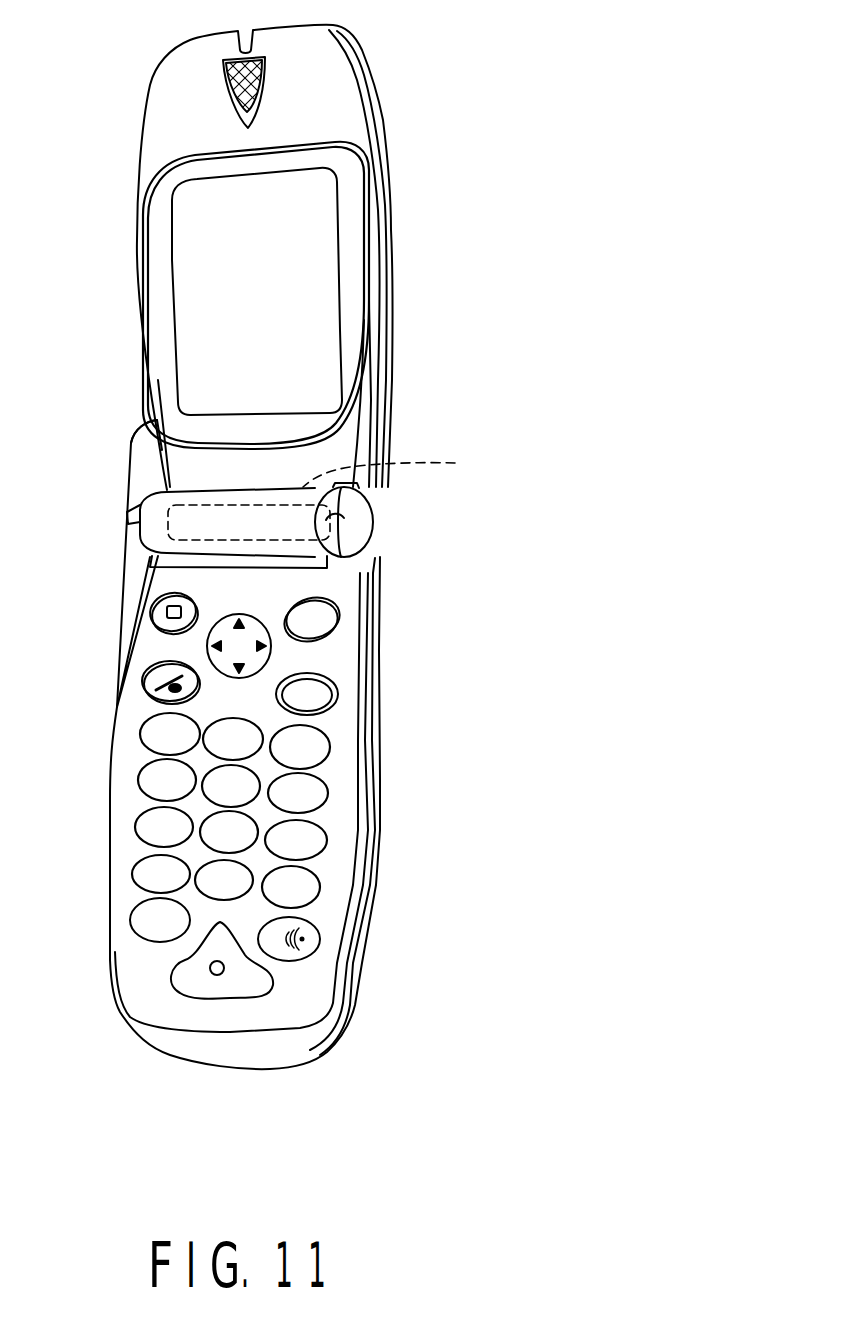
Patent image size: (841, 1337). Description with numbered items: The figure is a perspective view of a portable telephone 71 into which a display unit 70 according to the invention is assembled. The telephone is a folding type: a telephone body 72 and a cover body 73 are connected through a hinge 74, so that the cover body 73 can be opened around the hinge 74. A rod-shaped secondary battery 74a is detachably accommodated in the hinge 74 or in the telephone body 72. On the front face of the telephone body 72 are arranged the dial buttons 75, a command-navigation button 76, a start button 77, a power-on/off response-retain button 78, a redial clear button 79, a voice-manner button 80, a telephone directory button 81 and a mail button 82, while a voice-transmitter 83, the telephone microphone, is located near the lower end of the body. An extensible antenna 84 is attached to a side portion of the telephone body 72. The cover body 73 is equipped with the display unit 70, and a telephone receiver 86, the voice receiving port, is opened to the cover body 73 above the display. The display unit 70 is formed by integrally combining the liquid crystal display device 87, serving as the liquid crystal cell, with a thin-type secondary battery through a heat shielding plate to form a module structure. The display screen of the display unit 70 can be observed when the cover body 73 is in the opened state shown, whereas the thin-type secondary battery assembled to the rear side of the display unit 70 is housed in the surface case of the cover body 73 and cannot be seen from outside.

The display unit 70 is at (337, 225).
The portable telephone 71 is at (393, 343).
The telephone body 72 is at (370, 737).
The cover body 73 is at (388, 362).
The hinge 74 is at (327, 515).
The rod-shaped secondary battery 74a is at (411, 469).
The dial buttons 75 is at (133, 868).
The command-navigation button 76 is at (207, 653).
The start button 77 is at (150, 680).
The power-on/off response-retain button 78 is at (338, 690).
The redial clear button 79 is at (340, 613).
The voice-manner button 80 is at (303, 950).
The telephone directory button 81 is at (153, 600).
The mail button 82 is at (140, 917).
The voice-transmitter 83 is at (213, 968).
The extensible antenna 84 is at (142, 457).
The telephone receiver 86 is at (243, 33).
The liquid crystal display device 87 is at (200, 274).